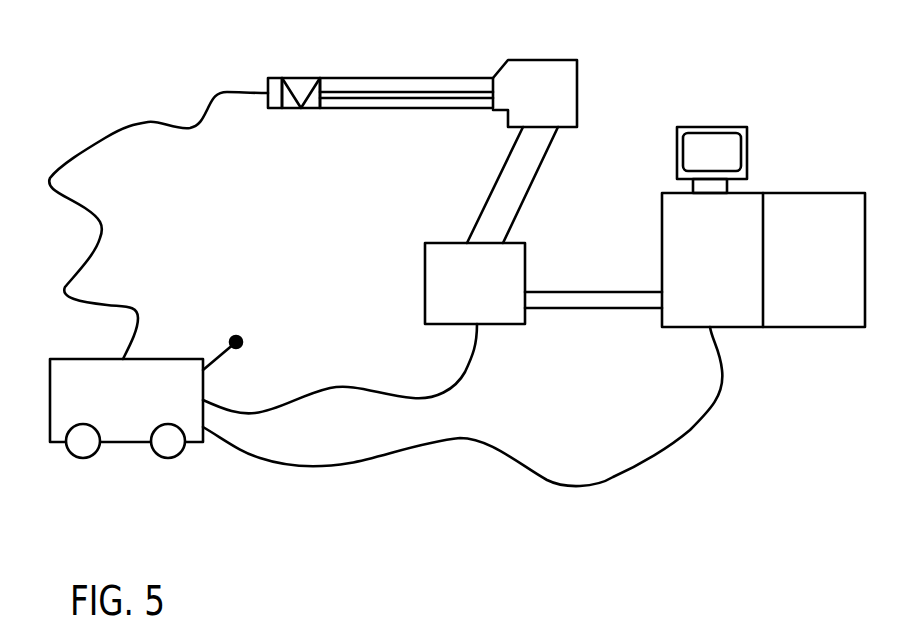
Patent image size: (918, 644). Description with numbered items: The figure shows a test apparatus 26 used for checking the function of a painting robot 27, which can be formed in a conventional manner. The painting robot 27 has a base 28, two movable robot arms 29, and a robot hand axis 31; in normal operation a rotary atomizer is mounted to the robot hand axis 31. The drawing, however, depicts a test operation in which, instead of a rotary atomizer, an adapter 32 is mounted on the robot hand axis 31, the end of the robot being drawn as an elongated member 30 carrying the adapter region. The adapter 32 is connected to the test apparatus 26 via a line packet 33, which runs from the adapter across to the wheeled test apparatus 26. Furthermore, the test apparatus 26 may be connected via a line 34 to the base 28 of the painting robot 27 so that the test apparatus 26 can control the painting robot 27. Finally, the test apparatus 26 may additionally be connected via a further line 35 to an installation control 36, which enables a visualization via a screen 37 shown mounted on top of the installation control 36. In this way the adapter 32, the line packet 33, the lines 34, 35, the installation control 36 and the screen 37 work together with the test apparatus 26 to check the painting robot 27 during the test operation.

The test apparatus 26 is at (75, 358).
The painting robot 27 is at (440, 139).
The base 28 is at (425, 272).
The robot arms 29 is at (533, 190).
The probe tube 30 is at (432, 78).
The robot hand axis 31 is at (298, 78).
The adapter 32 is at (268, 108).
The line packet 33 is at (102, 228).
The line 34 is at (478, 360).
The line 35 is at (680, 438).
The installation control 36 is at (787, 193).
The screen 37 is at (716, 127).